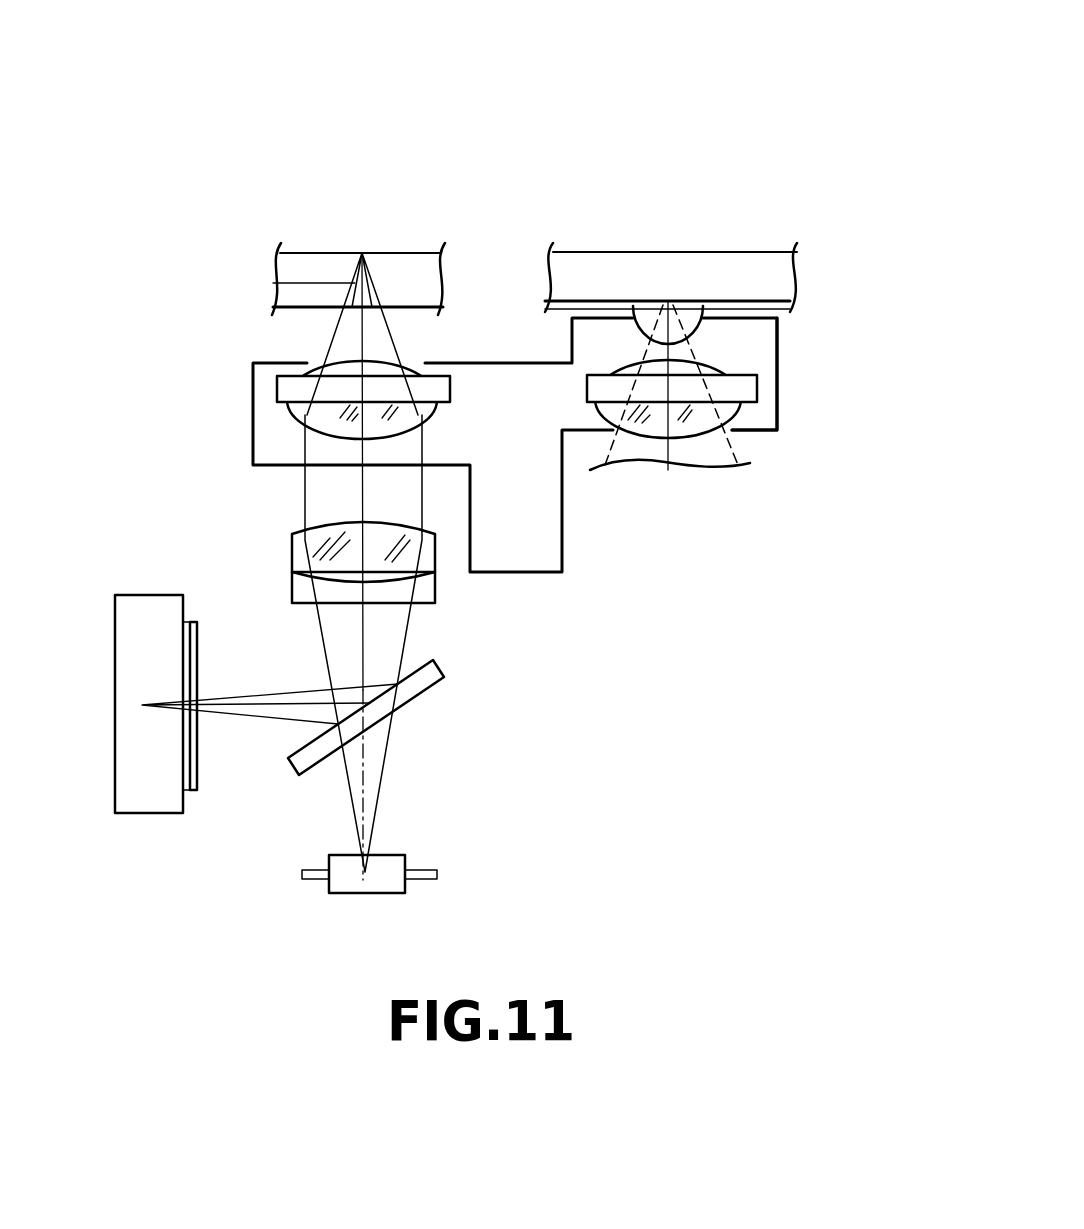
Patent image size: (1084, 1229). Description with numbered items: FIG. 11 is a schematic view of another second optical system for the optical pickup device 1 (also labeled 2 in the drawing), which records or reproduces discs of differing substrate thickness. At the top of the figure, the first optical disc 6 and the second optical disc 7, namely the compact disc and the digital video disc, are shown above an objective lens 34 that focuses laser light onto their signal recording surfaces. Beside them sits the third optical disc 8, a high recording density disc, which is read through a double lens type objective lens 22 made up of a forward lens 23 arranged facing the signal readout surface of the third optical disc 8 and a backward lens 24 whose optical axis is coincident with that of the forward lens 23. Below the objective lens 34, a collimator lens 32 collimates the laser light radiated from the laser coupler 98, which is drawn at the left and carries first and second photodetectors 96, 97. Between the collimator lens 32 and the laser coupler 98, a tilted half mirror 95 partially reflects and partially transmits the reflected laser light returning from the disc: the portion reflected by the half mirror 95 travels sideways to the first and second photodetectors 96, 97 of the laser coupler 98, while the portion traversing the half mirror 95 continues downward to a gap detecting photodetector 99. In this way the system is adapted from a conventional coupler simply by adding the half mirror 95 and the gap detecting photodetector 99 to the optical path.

The optical pickup device 1 is at (592, 168).
The optical pickup 2 is at (515, 301).
The first optical disc 6 is at (417, 267).
The second optical disc 7 is at (300, 265).
The third optical disc 8 is at (757, 273).
The double lens type objective lens 22 is at (792, 361).
The forward lens 23 is at (680, 330).
The backward lens 24 is at (703, 413).
The collimator lens 32 is at (422, 588).
The objective lens 34 is at (283, 390).
The half mirror 95 is at (420, 687).
The first photodetector 96 is at (218, 646).
The second photodetector 97 is at (190, 663).
The laser coupler 98 is at (130, 623).
The gap detecting photodetector 99 is at (395, 862).